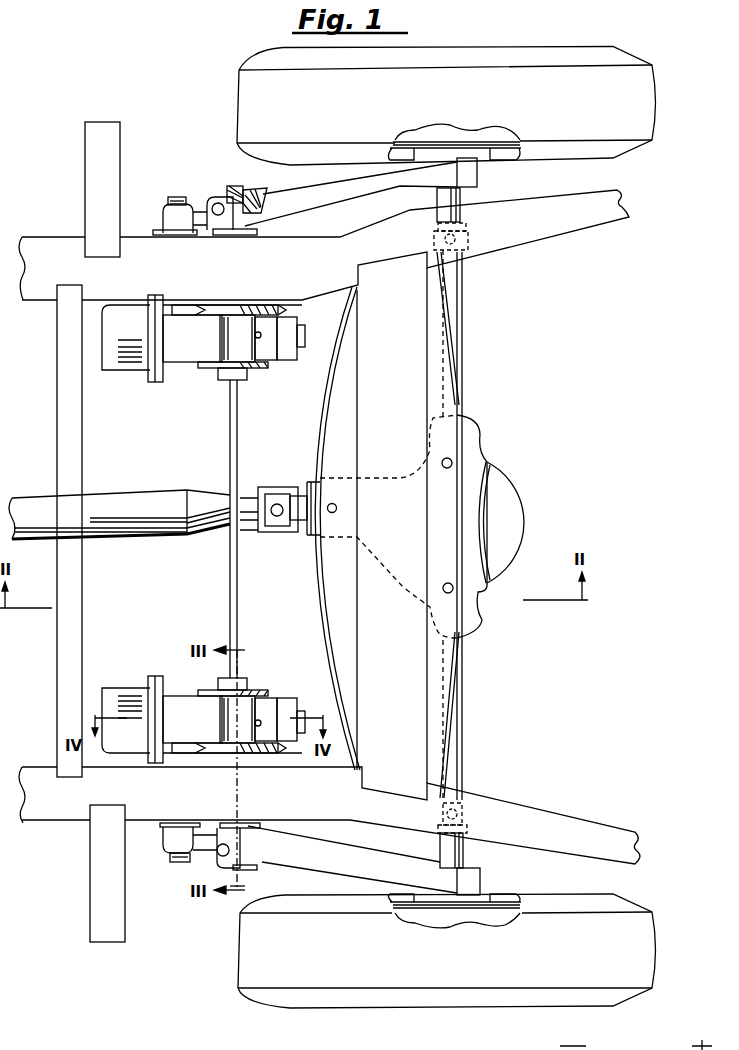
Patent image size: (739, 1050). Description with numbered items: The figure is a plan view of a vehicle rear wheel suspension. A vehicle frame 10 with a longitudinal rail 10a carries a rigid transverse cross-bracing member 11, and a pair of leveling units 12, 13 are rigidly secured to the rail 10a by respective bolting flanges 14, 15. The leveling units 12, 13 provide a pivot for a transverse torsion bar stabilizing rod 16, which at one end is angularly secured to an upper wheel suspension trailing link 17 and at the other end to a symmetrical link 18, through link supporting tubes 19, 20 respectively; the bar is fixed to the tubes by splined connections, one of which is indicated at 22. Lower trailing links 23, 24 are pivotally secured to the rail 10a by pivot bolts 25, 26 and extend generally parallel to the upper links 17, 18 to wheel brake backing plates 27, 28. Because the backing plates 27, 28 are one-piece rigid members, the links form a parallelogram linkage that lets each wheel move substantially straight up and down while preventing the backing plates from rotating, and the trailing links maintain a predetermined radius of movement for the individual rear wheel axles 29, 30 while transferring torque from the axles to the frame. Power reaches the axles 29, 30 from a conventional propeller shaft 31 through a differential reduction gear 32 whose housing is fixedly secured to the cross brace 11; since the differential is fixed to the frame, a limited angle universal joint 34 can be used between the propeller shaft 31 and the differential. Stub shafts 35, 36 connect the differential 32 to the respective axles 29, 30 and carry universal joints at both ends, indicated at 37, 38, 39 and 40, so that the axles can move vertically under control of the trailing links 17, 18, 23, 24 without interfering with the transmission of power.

The vehicle frame 10 is at (35, 809).
The longitudinal rail 10a is at (38, 242).
The transverse cross-bracing member 11 is at (415, 385).
The leveling unit 12 is at (186, 704).
The leveling unit 13 is at (194, 353).
The bolting flange 14 is at (300, 756).
The bolting flange 15 is at (298, 298).
The transverse torsion bar stabilizing rod 16 is at (230, 558).
The upper wheel suspension trailing link 17 is at (348, 855).
The symmetrical link 18 is at (364, 200).
The link supporting tube 19 is at (215, 870).
The link supporting tube 20 is at (222, 190).
The splined connection 22 is at (254, 192).
The lower trailing link 23 is at (163, 838).
The lower trailing link 24 is at (160, 220).
The pivot bolt 25 is at (170, 858).
The pivot bolt 26 is at (172, 197).
The wheel brake backing plate 27 is at (492, 898).
The wheel brake backing plate 28 is at (490, 151).
The rear wheel axle 29 is at (463, 852).
The rear wheel axle 30 is at (462, 197).
The propeller shaft 31 is at (153, 500).
The differential reduction gear 32 is at (482, 480).
The universal joint 34 is at (268, 486).
The stub shaft 35 is at (458, 722).
The stub shaft 36 is at (458, 314).
The universal joint 37 is at (466, 812).
The universal joint 38 is at (470, 626).
The universal joint 39 is at (466, 237).
The universal joint 40 is at (470, 430).